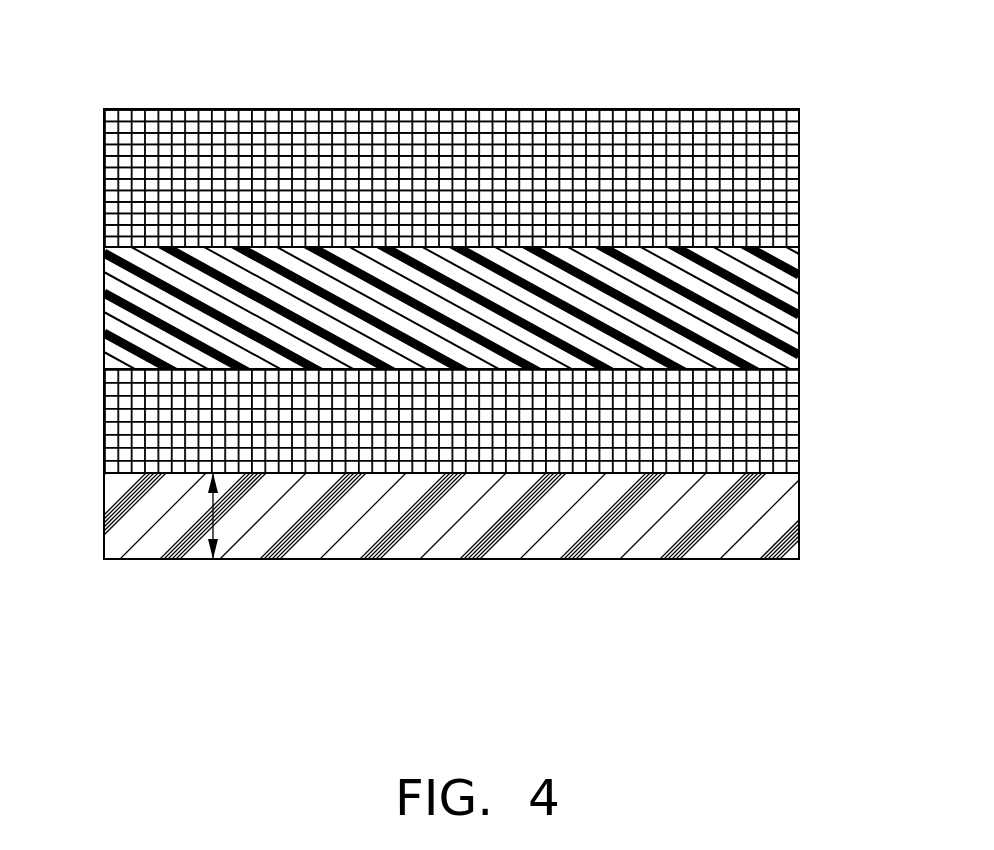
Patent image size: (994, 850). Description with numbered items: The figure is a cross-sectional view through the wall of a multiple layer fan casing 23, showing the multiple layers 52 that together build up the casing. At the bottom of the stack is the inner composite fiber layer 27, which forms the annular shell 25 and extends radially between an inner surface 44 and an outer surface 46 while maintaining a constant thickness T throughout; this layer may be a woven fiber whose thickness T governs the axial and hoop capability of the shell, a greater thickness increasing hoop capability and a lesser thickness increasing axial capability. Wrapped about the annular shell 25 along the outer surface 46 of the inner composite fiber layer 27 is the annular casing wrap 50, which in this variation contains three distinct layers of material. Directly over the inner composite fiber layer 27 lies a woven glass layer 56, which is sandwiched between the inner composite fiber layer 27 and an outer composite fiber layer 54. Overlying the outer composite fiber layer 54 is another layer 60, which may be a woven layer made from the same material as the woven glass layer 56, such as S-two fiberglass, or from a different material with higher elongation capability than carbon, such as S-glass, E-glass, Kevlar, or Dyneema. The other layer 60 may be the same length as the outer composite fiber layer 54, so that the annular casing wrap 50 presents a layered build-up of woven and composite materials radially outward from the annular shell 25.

The multiple layer fan casing 23 is at (548, 89).
The annular casing wrap 50 is at (92, 472).
The multiple layers 52 is at (864, 110).
The other layer 60 is at (806, 247).
The outer composite fiber layer 54 is at (806, 369).
The woven glass layer 56 is at (806, 473).
The inner composite fiber layer 27 is at (806, 559).
The thickness T is at (213, 517).
The outer surface 46 is at (495, 473).
The inner surface 44 is at (413, 560).
The annular shell 25 is at (700, 566).